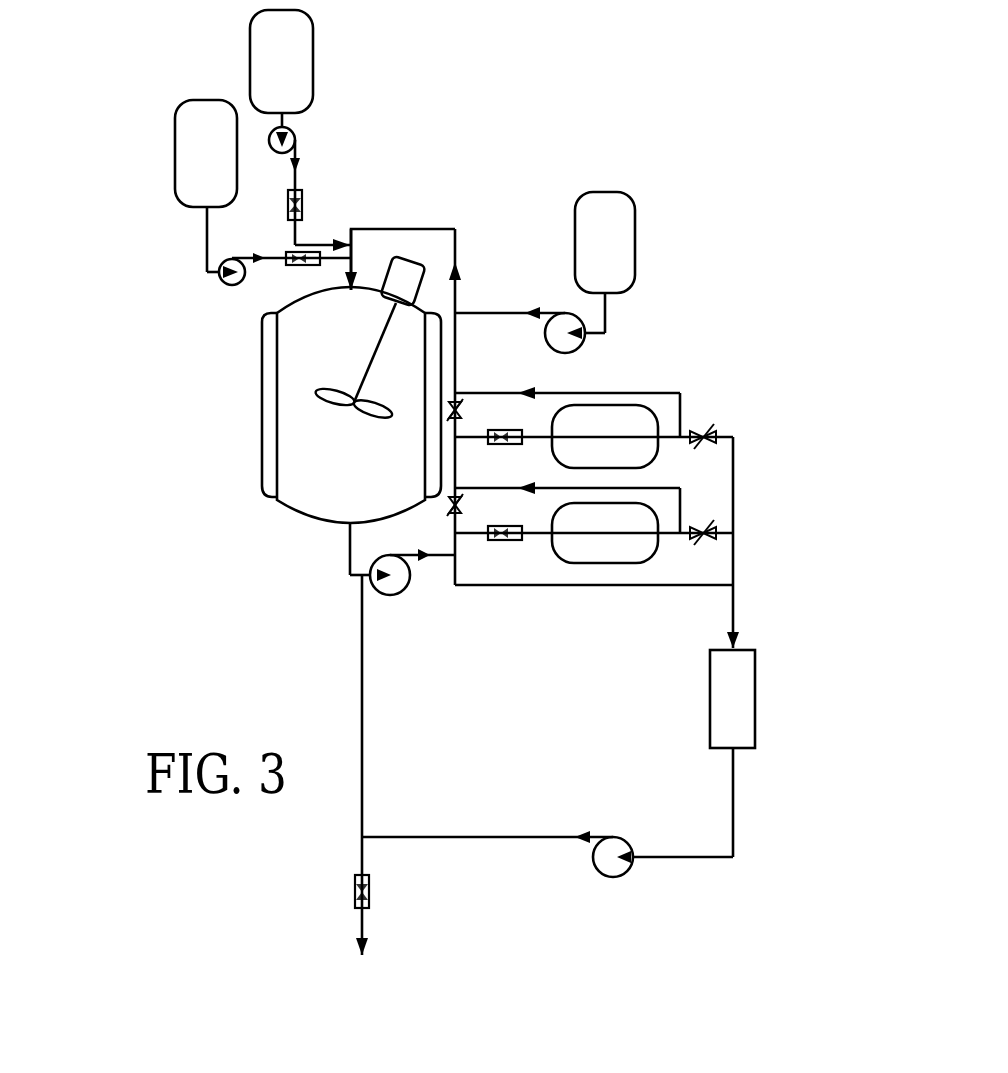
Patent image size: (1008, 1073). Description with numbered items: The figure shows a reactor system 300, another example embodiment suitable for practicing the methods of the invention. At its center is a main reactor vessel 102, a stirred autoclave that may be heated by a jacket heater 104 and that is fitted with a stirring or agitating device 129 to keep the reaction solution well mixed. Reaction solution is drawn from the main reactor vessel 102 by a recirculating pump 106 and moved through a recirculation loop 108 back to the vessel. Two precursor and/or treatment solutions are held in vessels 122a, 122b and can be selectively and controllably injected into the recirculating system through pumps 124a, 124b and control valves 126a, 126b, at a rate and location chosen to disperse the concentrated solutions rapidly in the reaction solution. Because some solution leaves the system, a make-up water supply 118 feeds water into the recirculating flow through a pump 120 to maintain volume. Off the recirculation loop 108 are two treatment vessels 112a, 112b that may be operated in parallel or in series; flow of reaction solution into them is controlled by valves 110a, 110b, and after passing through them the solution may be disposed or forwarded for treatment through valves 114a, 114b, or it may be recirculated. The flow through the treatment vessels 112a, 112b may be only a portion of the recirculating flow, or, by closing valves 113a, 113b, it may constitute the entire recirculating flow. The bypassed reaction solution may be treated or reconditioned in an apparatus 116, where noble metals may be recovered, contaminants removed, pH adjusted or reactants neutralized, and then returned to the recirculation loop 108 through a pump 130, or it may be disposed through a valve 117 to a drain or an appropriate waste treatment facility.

The system 300 is at (556, 54).
The main reactor vessel 102 is at (305, 435).
The jacket heater 104 is at (262, 362).
The recirculating pump 106 is at (371, 587).
The recirculation loop 108 is at (397, 229).
The valve 110a is at (507, 541).
The valve 110b is at (513, 428).
The treatment vessel 112a is at (588, 563).
The treatment vessel 112b is at (600, 405).
The valve 113a is at (455, 512).
The valve 113b is at (457, 420).
The valve 114a is at (698, 545).
The valve 114b is at (712, 430).
The apparatus 116 is at (710, 718).
The valve 117 is at (369, 892).
The make-up water supply 118 is at (637, 227).
The pump 120 is at (580, 352).
The vessel 122a is at (175, 183).
The vessel 122b is at (250, 60).
The pump 124a is at (222, 285).
The pump 124b is at (295, 140).
The control valve 126a is at (287, 264).
The control valve 126b is at (302, 205).
The stirring or agitating device 129 is at (421, 280).
The pump 130 is at (613, 877).